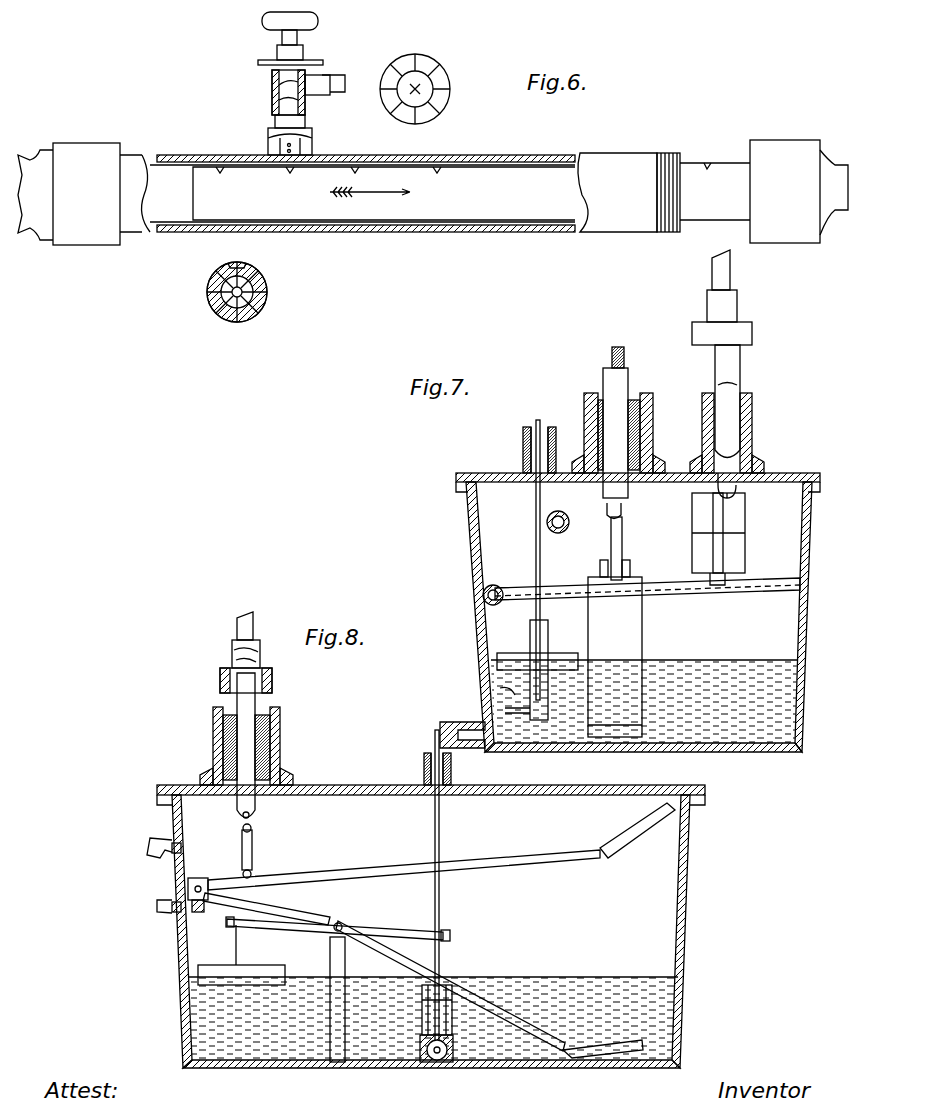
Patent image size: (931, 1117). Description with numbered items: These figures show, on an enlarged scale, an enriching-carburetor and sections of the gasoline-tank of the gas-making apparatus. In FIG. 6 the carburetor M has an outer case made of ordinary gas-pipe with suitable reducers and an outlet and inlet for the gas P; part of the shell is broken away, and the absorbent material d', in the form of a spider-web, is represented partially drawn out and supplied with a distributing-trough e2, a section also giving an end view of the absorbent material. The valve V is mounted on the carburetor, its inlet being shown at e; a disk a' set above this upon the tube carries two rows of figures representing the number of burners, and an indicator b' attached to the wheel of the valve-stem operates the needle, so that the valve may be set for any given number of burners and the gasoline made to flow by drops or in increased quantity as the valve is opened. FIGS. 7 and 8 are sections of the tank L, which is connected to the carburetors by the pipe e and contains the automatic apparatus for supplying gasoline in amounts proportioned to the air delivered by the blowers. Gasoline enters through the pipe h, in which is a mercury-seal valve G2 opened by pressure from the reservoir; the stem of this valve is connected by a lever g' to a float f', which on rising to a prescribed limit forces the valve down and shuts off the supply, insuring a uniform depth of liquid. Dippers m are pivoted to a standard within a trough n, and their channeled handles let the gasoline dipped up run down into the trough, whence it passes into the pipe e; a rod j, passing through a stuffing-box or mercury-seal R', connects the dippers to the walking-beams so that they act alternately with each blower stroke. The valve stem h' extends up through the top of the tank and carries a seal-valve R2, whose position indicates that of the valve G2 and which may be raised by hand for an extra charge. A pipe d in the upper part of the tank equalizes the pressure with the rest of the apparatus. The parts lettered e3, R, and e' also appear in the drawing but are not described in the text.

In FIG. 6, the gas inlet and outlet P is at (42, 172).
In FIG. 6, the valve V is at (272, 100).
In FIG. 6, the indicator b' is at (309, 25).
In FIG. 6, the disk a' is at (307, 53).
In FIG. 6, the absorbent material d' is at (459, 180).
In FIG. 6, the inlet / pipe e is at (325, 92).
In FIG. 7, the inlet / pipe e is at (495, 575).
In FIG. 8, the inlet / pipe e is at (165, 921).
In FIG. 6, the valve base e3 is at (312, 142).
In FIG. 6, the distributing-trough e2 is at (218, 170).
In FIG. 6, the enriching-carburetor M is at (629, 192).
In FIG. 7, the rod j is at (624, 365).
In FIG. 8, the rod j is at (255, 632).
In FIG. 7, the stud R is at (737, 394).
In FIG. 7, the stuffing-box or mercury-seal R' is at (623, 433).
In FIG. 8, the stuffing-box or mercury-seal R' is at (258, 745).
In FIG. 7, the seal-valve R2 is at (522, 456).
In FIG. 8, the seal-valve R2 is at (424, 766).
In FIG. 7, the pipe d is at (571, 509).
In FIG. 8, the pipe d is at (157, 865).
In FIG. 7, the pipe h is at (462, 718).
In FIG. 8, the pipe h is at (444, 913).
In FIG. 7, the valve stem h' is at (527, 560).
In FIG. 7, the trough n is at (560, 595).
In FIG. 8, the trough n is at (206, 915).
In FIG. 7, the dipper m is at (745, 540).
In FIG. 8, the dipper m is at (628, 835).
In FIG. 7, the tank L is at (638, 612).
In FIG. 8, the tank L is at (431, 926).
In FIG. 7, the float f' is at (537, 648).
In FIG. 8, the float f' is at (241, 955).
In FIG. 7, the post e' is at (555, 666).
In FIG. 8, the post e' is at (329, 999).
In FIG. 7, the mercury-seal valve G2 is at (514, 700).
In FIG. 8, the mercury-seal valve G2 is at (422, 1005).
In FIG. 8, the lever g' is at (384, 970).